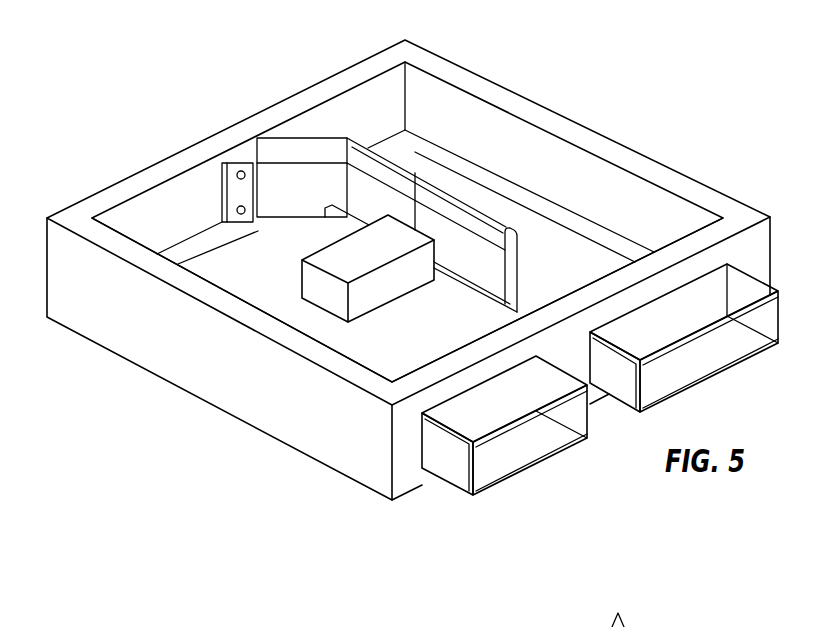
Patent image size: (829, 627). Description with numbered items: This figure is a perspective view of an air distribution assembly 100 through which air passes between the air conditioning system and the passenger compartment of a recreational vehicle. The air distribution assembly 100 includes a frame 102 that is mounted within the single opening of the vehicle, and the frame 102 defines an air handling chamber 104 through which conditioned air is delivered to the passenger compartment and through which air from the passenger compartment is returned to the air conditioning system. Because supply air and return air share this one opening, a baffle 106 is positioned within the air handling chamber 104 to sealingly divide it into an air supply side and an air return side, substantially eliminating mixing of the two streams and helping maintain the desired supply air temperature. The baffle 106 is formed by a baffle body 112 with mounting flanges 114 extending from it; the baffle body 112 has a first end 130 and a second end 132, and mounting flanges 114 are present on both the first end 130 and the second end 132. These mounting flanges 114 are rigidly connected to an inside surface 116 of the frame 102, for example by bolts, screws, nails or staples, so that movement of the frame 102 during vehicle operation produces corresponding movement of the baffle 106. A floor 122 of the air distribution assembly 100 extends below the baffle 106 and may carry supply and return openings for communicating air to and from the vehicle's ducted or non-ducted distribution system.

The air distribution assembly 100 is at (132, 150).
The frame 102 is at (660, 166).
The air handling chamber 104 is at (253, 272).
The baffle 106 is at (398, 163).
The baffle body 112 is at (430, 215).
The mounting flanges 114 is at (222, 162).
The inside surface 116 is at (190, 200).
The floor 122 is at (392, 352).
The first end 130 is at (283, 128).
The second end 132 is at (512, 305).